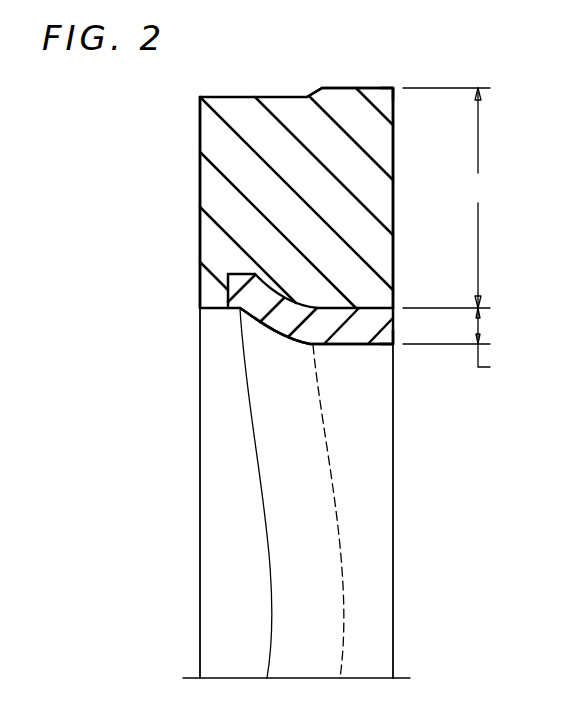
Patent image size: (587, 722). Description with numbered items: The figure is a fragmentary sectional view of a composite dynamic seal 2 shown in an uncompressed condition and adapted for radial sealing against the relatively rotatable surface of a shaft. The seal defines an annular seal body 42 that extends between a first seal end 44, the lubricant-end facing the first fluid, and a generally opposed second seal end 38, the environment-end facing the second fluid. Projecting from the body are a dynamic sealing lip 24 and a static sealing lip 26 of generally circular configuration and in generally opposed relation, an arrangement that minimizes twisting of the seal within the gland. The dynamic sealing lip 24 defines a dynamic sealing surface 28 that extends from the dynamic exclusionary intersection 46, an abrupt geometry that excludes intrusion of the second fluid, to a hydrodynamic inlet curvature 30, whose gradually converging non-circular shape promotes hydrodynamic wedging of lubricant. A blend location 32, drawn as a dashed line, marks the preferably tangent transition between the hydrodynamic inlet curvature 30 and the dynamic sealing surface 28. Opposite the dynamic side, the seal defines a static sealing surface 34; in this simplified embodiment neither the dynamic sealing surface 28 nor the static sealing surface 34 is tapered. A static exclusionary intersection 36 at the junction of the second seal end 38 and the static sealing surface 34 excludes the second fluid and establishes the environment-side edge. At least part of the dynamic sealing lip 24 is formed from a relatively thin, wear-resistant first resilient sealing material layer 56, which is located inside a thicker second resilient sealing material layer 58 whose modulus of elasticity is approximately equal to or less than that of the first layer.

The dynamic seal 2 is at (170, 177).
The dynamic sealing lip 24 is at (364, 328).
The static sealing lip 26 is at (368, 88).
The dynamic sealing surface 28 is at (343, 346).
The hydrodynamic inlet curvature 30 is at (302, 345).
The blend location 32 is at (337, 502).
The static sealing surface 34 is at (345, 88).
The static exclusionary intersection 36 is at (395, 92).
The second seal end 38 is at (395, 160).
The annular seal body 42 is at (272, 195).
The first seal end 44 is at (200, 222).
The dynamic exclusionary intersection 46 is at (393, 345).
The first resilient sealing material layer 56 is at (459, 343).
The second resilient sealing material layer 58 is at (446, 198).